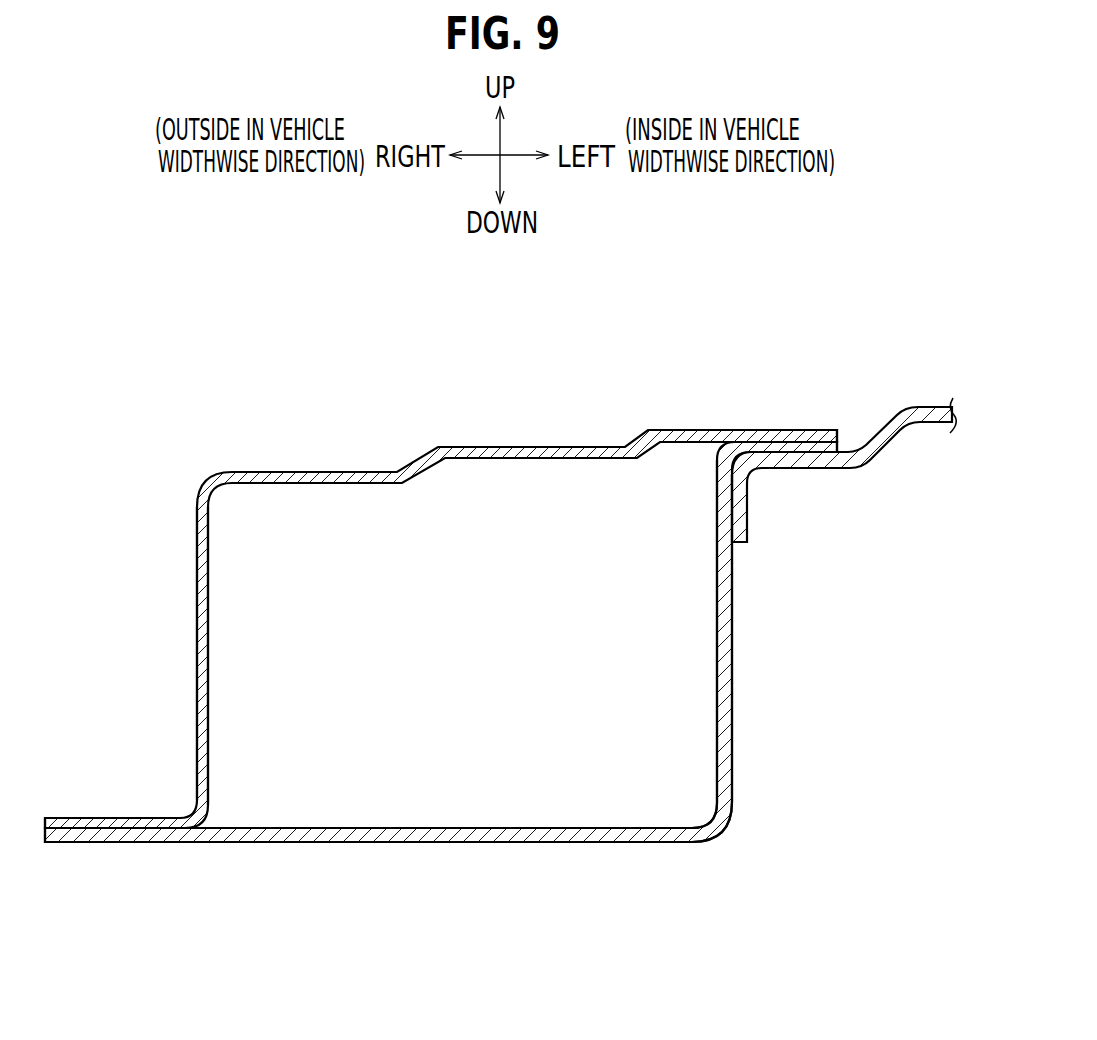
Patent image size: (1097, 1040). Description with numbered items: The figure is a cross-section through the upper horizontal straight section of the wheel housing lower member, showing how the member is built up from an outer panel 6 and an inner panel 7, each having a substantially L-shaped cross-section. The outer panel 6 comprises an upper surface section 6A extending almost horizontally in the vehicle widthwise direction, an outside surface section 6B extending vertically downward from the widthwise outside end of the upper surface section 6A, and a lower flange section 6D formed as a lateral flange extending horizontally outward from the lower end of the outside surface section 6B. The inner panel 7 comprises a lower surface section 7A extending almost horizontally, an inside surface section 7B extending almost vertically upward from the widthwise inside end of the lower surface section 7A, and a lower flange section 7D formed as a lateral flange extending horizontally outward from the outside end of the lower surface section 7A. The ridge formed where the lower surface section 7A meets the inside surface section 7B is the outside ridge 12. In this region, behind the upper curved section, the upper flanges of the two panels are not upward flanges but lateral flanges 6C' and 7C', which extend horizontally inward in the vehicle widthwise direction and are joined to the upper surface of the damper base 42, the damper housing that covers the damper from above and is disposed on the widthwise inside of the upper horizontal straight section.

The outer panel 6 is at (262, 410).
The upper surface section 6A is at (528, 445).
The outside surface section 6B is at (197, 597).
The lateral flange 6C' is at (742, 409).
The lower flange section 6D is at (108, 818).
The inner panel 7 is at (751, 274).
The lower surface section 7A is at (405, 842).
The inside surface section 7B is at (732, 633).
The lateral flange 7C' is at (807, 401).
The lower flange section 7D is at (108, 842).
The outside ridge 12 is at (718, 832).
The damper base 42 is at (922, 424).